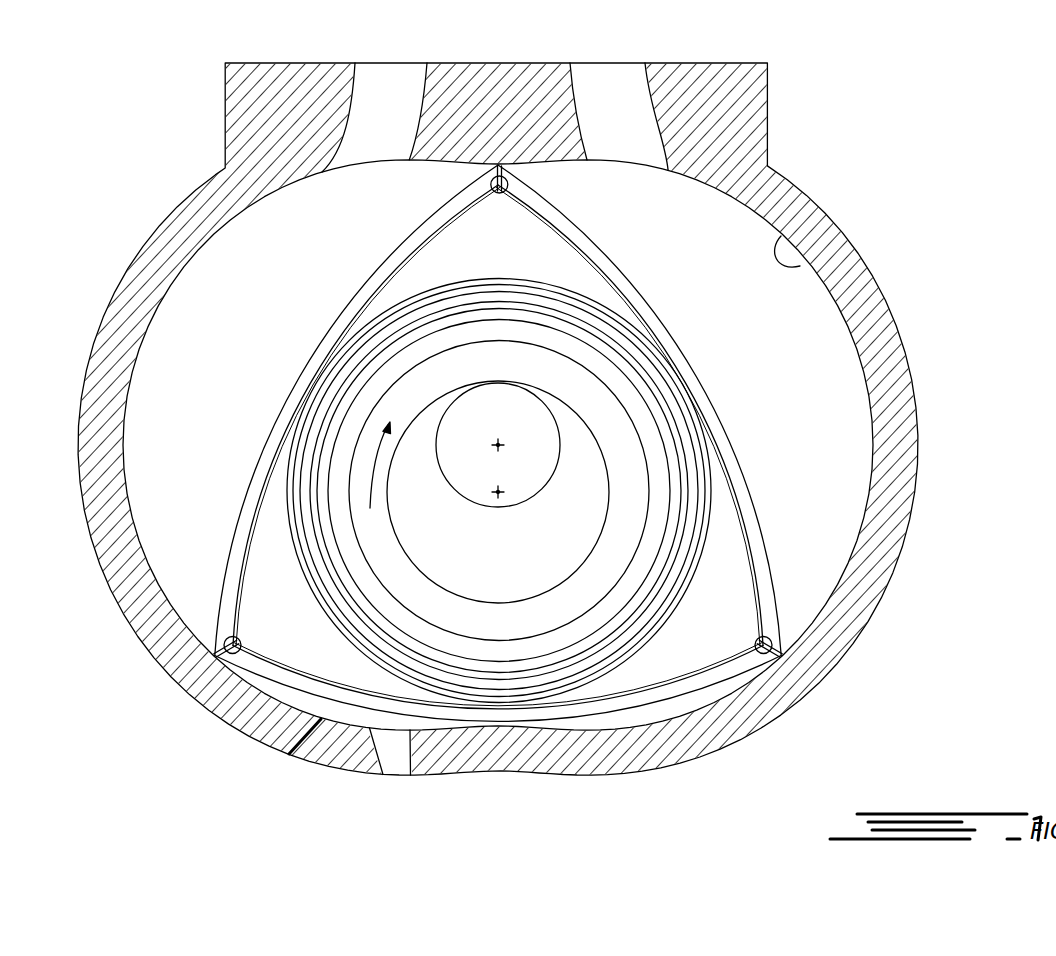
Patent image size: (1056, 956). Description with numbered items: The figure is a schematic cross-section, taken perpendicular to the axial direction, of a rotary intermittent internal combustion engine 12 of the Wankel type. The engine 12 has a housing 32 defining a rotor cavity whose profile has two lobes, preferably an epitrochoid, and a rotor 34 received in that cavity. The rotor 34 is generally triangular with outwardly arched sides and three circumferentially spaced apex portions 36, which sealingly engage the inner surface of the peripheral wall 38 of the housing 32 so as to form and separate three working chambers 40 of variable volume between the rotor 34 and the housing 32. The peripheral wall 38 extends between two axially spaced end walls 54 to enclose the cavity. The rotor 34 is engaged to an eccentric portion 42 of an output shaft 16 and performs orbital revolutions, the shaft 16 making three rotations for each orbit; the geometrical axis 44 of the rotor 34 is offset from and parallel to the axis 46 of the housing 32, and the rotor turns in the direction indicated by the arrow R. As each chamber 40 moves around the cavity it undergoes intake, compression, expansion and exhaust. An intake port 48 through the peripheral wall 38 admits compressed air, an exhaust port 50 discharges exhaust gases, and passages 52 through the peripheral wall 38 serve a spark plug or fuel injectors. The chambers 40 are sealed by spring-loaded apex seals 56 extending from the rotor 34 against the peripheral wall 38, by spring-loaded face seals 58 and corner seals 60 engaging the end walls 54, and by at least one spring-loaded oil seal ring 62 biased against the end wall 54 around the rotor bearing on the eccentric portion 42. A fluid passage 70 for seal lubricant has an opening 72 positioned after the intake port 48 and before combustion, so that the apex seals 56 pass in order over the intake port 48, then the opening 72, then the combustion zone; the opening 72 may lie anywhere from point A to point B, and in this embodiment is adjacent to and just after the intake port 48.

The rotary intermittent internal combustion engine 12 is at (543, 448).
The output shaft 16 is at (525, 478).
The housing 32 is at (552, 440).
The rotor 34 is at (524, 487).
The apex portions 36 is at (479, 464).
The peripheral wall 38 is at (893, 308).
The working chambers 40 is at (228, 365).
The eccentric portion 42 is at (521, 566).
The geometrical axis 44 is at (498, 492).
The axis 46 is at (498, 445).
The intake port 48 is at (620, 137).
The exhaust port 50 is at (377, 133).
The passages 52 is at (388, 753).
The end walls 54 is at (837, 508).
The apex seals 56 is at (216, 657).
The face seals 58 is at (231, 552).
The corner seals 60 is at (226, 639).
The oil seal ring 62 is at (612, 638).
The fluid passage 70 is at (910, 158).
The opening 72 is at (800, 266).
The point A is at (797, 135).
The point B is at (500, 747).
The rotation direction R is at (380, 465).